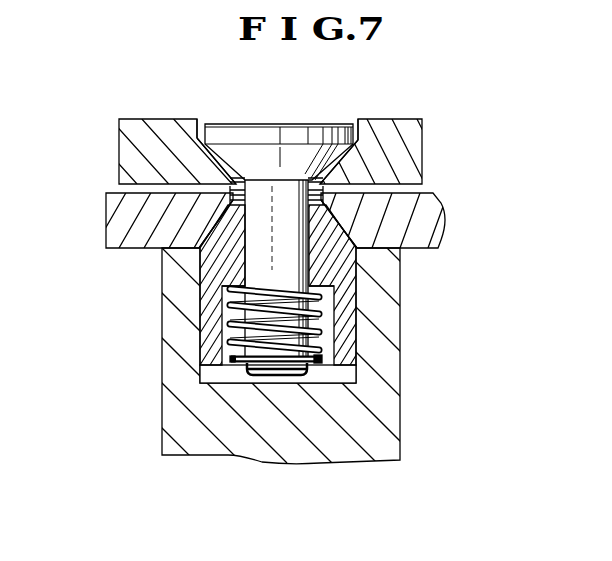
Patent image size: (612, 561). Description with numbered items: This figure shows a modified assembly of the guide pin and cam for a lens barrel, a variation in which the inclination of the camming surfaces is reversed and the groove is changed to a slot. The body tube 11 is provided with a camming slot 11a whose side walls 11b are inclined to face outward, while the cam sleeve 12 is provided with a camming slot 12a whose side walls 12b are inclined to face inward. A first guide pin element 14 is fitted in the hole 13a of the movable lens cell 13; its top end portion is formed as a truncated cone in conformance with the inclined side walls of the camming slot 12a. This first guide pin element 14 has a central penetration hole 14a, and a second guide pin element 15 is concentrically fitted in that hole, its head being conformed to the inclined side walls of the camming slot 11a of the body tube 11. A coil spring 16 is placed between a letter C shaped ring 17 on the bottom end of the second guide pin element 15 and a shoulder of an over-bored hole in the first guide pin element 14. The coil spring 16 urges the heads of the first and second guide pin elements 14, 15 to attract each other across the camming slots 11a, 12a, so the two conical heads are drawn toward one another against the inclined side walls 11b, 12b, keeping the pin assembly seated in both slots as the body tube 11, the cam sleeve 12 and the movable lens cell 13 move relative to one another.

The body tube 11 is at (394, 132).
The camming slot 11a is at (260, 119).
The side walls 11b is at (215, 140).
The cam sleeve 12 is at (425, 210).
The camming slot 12a is at (312, 174).
The side walls 12b is at (215, 227).
The movable lens cell 13 is at (362, 427).
The hole 13a is at (310, 377).
The first guide pin element 14 is at (210, 343).
The central penetration hole 14a is at (260, 267).
The second guide pin element 15 is at (295, 132).
The coil spring 16 is at (303, 322).
The letter "C" shaped ring 17 is at (250, 363).